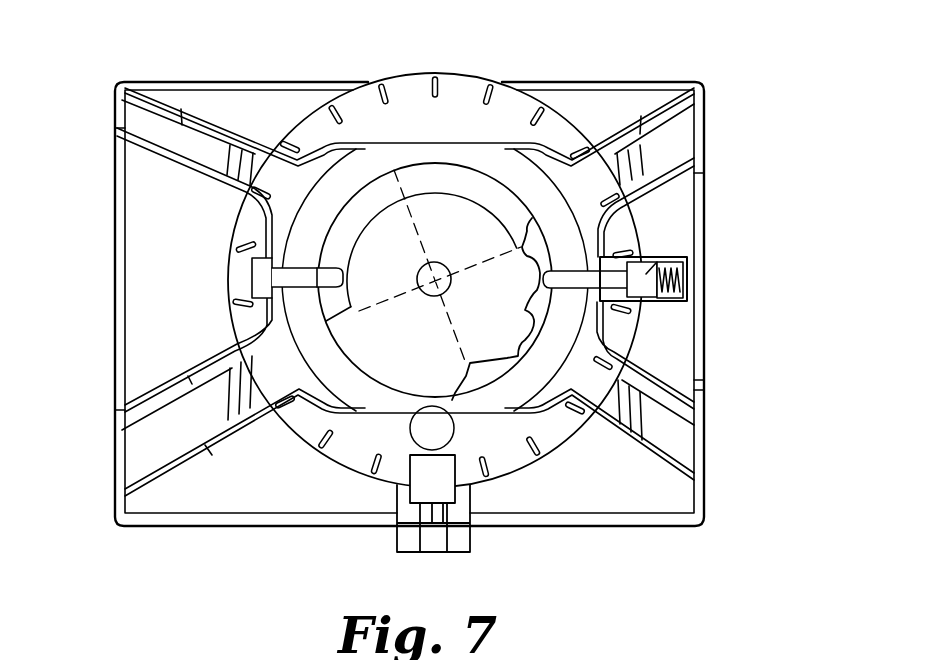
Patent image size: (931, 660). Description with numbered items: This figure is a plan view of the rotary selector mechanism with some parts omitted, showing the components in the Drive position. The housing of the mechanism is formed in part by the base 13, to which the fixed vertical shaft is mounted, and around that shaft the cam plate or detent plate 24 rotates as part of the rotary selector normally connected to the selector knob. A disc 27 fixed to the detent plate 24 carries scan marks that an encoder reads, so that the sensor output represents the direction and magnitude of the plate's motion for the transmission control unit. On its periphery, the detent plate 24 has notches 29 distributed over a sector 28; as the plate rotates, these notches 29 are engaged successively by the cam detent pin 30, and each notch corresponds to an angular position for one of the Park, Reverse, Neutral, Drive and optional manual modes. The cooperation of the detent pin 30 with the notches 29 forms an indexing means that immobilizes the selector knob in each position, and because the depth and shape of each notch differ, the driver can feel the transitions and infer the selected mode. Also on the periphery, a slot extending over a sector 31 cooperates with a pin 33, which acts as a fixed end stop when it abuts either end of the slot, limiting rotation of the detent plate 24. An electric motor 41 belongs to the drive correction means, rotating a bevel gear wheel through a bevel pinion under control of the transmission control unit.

The base 13 is at (633, 92).
The detent plate 24 is at (423, 188).
The disc 27 is at (486, 93).
The sector 28 is at (472, 270).
The notches 29 is at (523, 247).
The cam detent pin 30 is at (686, 274).
The sector 31 is at (416, 236).
The pin 33 is at (296, 272).
The electric motor 41 is at (408, 537).